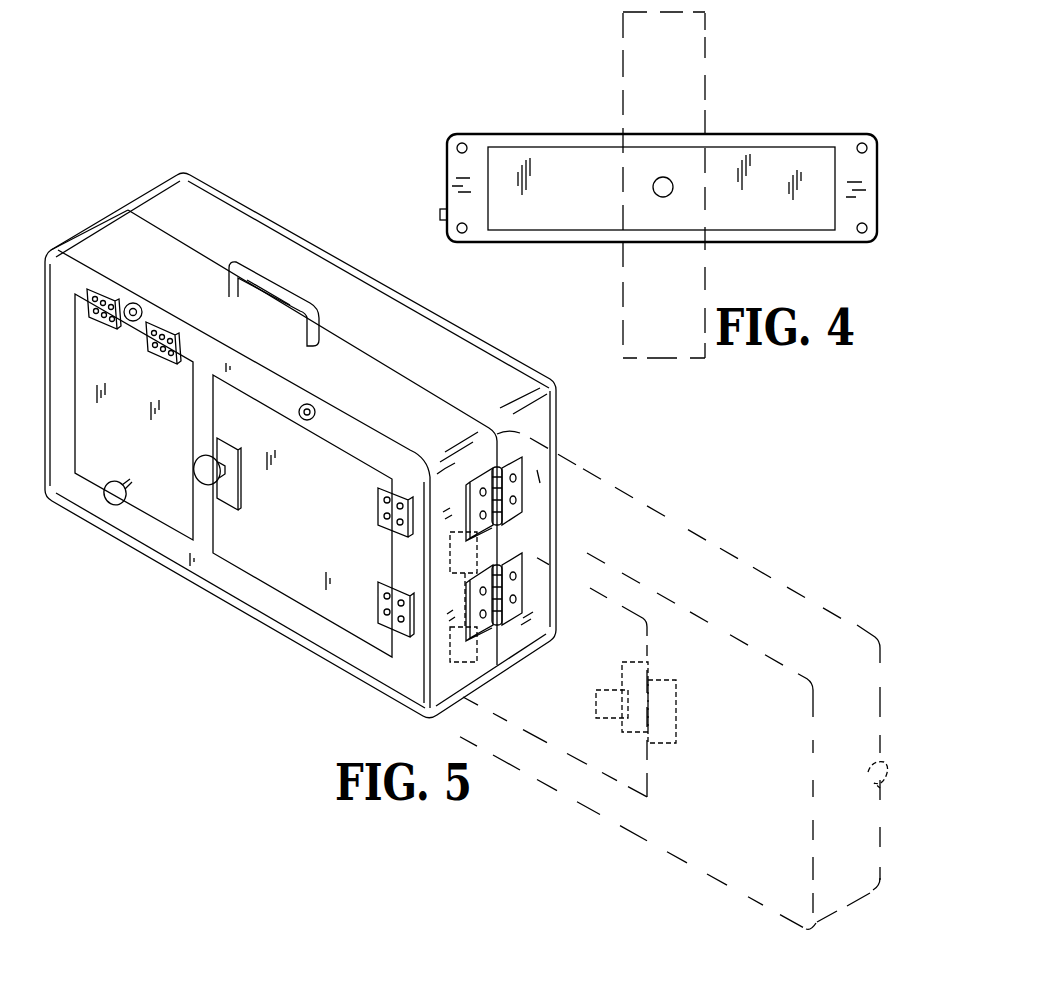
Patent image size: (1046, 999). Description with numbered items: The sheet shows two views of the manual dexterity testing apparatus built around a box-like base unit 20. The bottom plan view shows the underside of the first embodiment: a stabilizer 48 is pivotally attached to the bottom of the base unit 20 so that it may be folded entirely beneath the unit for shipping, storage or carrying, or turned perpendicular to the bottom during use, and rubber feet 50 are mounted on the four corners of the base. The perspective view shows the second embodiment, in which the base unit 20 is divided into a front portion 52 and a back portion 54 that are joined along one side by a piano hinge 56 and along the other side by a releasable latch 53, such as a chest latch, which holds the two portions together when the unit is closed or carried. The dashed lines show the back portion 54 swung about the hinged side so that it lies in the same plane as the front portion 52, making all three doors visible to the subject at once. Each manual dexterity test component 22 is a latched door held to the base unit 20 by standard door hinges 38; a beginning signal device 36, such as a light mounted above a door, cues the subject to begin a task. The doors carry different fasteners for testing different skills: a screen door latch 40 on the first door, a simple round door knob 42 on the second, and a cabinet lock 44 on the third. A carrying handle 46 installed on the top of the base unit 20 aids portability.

In FIG. 4, the base unit 20 is at (773, 130).
In FIG. 5, the base unit 20 is at (293, 667).
In FIG. 5, the manual dexterity test component 22 is at (144, 513).
In FIG. 5, the beginning signal device 36 is at (139, 306).
In FIG. 5, the door hinges 38 is at (160, 358).
In FIG. 5, the screen door latch 40 is at (196, 472).
In FIG. 5, the round door knob 42 is at (122, 481).
In FIG. 5, the cabinet lock 44 is at (597, 690).
In FIG. 5, the carrying handle 46 is at (282, 283).
In FIG. 4, the stabilizer 48 is at (583, 165).
In FIG. 4, the rubber feet 50 is at (468, 143).
In FIG. 5, the front portion 52 is at (107, 242).
In FIG. 5, the releasable latch 53 is at (870, 786).
In FIG. 5, the back portion 54 is at (210, 203).
In FIG. 5, the piano hinge 56 is at (523, 497).